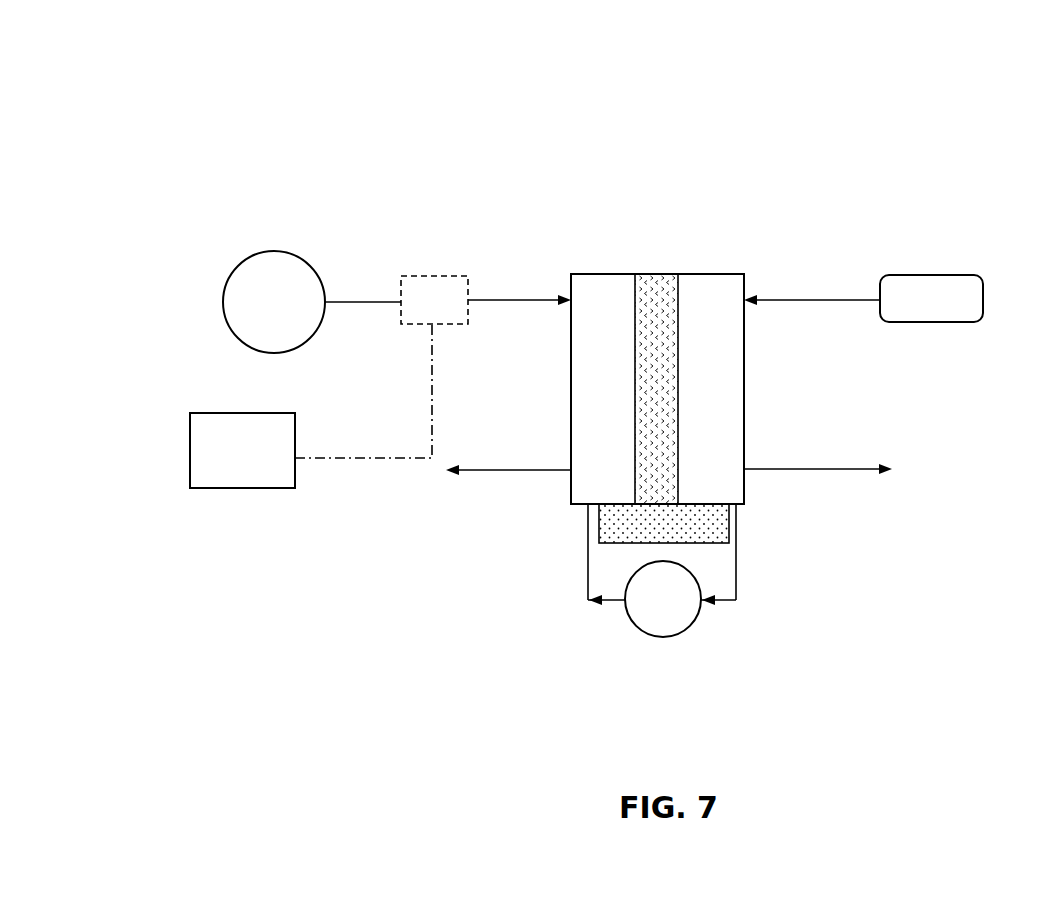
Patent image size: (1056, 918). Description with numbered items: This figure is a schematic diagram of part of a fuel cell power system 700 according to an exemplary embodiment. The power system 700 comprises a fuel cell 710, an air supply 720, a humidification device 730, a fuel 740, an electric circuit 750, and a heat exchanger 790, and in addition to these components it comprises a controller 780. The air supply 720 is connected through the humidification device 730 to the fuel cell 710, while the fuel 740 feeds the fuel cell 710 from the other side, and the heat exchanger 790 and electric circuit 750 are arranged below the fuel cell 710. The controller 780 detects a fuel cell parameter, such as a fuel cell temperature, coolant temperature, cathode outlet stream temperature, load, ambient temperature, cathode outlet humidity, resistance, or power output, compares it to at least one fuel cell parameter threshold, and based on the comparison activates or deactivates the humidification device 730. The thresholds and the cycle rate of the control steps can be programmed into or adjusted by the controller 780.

The power system 700 is at (234, 105).
The fuel cell 710 is at (719, 218).
The air supply 720 is at (276, 240).
The humidification device 730 is at (433, 265).
The fuel 740 is at (930, 258).
The electric circuit 750 is at (732, 629).
The controller 780 is at (244, 502).
The heat exchanger 790 is at (732, 534).